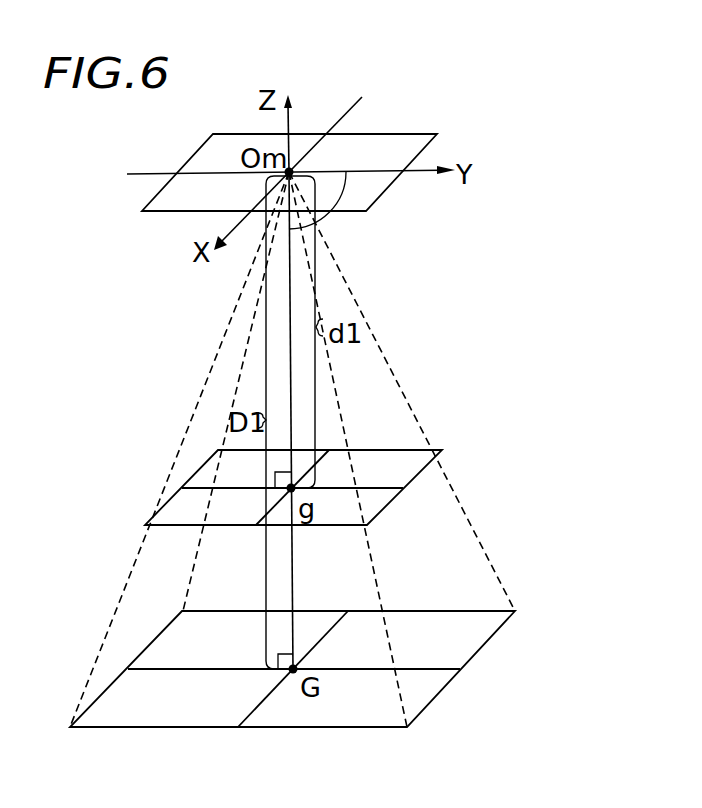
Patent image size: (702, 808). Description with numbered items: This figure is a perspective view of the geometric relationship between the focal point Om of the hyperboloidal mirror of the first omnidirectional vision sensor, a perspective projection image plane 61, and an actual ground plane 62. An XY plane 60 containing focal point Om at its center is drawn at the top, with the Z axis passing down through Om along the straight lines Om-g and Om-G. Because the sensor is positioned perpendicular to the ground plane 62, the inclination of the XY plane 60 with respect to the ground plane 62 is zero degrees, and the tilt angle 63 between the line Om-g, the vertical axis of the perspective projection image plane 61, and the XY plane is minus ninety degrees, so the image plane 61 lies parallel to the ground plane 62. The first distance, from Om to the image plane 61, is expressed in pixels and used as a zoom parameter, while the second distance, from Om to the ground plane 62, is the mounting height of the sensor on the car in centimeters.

The reference plane of camera at origin Om 60 is at (289, 172).
The perspective projection image plane 61 is at (442, 450).
The ground plane 62 is at (515, 611).
The tilt angle 63 is at (342, 198).